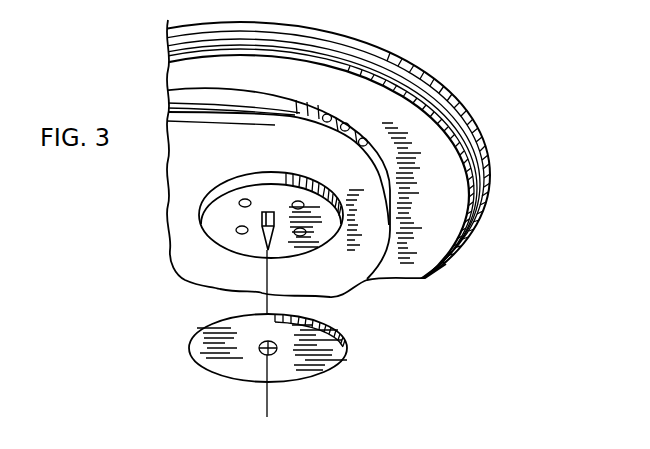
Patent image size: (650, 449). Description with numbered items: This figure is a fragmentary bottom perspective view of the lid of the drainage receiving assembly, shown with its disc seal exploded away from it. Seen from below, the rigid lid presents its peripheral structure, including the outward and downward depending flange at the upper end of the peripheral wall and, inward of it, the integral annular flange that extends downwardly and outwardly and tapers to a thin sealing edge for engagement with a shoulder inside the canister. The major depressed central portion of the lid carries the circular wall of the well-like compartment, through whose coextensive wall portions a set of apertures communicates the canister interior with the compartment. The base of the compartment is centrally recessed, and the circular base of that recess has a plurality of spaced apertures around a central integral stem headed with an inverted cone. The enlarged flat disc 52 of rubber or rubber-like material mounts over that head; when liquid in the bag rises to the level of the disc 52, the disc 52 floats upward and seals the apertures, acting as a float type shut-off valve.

The disc 52 is at (343, 349).